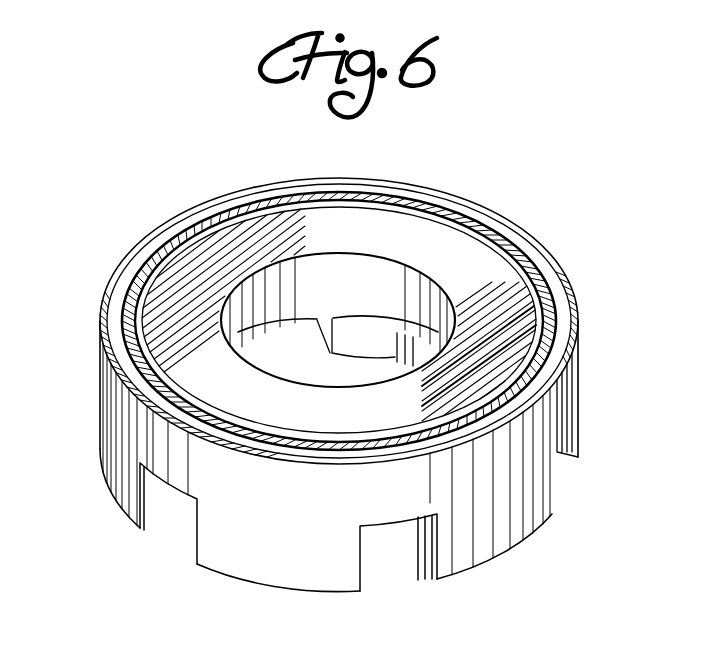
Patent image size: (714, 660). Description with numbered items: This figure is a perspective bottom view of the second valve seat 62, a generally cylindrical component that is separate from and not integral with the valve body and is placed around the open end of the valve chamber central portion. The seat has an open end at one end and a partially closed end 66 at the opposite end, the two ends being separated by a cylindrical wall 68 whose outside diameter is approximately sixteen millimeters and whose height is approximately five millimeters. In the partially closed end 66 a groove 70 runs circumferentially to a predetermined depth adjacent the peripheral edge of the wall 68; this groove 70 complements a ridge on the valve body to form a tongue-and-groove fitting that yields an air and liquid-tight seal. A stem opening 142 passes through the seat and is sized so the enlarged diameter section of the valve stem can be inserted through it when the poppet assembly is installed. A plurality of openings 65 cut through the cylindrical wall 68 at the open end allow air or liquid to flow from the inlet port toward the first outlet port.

The second valve seat 62 is at (546, 222).
The openings 65 is at (170, 530).
The partially closed end 66 is at (220, 235).
The cylindrical wall 68 is at (288, 548).
The groove 70 is at (120, 340).
The stem opening 142 is at (367, 288).